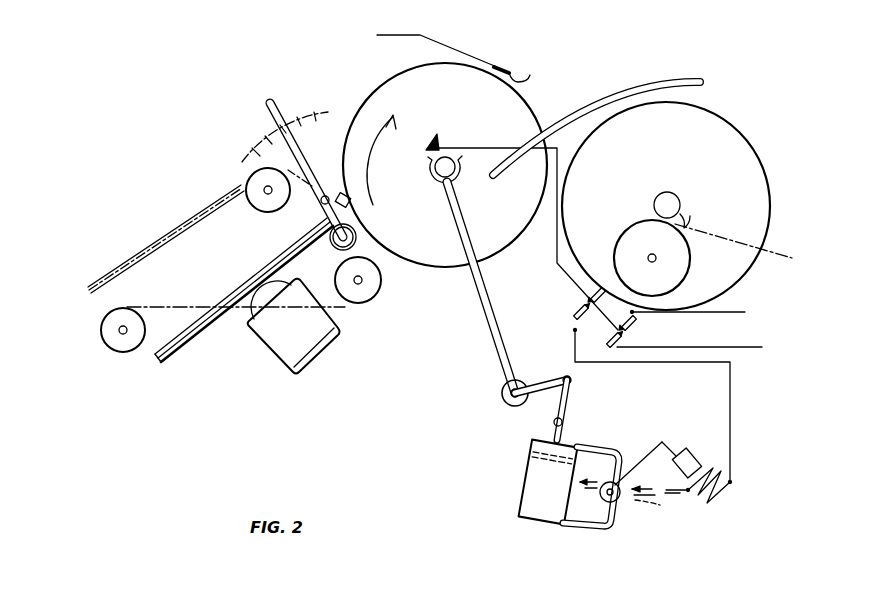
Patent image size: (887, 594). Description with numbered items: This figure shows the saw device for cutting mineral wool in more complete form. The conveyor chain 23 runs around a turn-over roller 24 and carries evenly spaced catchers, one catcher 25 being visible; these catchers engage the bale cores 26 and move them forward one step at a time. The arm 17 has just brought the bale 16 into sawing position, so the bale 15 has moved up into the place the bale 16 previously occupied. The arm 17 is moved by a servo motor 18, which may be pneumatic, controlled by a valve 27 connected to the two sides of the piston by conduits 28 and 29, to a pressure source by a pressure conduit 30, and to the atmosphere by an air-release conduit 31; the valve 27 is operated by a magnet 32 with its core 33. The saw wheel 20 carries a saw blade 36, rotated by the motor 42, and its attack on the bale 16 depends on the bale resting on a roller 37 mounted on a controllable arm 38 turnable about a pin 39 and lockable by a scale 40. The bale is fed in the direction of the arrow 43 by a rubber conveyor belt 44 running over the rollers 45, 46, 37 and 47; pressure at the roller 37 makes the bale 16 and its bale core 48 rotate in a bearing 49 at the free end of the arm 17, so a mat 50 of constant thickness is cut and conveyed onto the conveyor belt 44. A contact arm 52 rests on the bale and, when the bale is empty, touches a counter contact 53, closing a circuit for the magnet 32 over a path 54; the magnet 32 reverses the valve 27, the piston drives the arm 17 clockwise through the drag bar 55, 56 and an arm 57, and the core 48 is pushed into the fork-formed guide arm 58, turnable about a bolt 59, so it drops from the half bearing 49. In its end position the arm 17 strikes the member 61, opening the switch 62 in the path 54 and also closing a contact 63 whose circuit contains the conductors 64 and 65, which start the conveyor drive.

The bale 15 is at (688, 146).
The bale 16 is at (498, 114).
The arm 17 is at (496, 298).
The servo motor 18 is at (522, 480).
The saw wheel 20 is at (200, 350).
The conveyor chain 23 is at (728, 240).
The turn-over roller 24 is at (690, 262).
The catcher 25 is at (688, 212).
The bale core 26 is at (655, 196).
The valve 27 is at (618, 503).
The conduit 28 is at (580, 528).
The conduit 29 is at (606, 456).
The pressure conduit 30 is at (648, 500).
The air-release conduit 31 is at (594, 490).
The magnet 32 is at (695, 500).
The core 33 is at (694, 458).
The saw blade 36 is at (268, 260).
The roller 37 is at (334, 246).
The controllable arm 38 is at (331, 170).
The pin 39 is at (318, 203).
The scale 40 is at (312, 104).
The motor 42 is at (288, 356).
The arrow 43 is at (370, 168).
The conveyor belt 44 is at (180, 302).
The roller 45 is at (124, 352).
The roller 46 is at (380, 292).
The roller 47 is at (252, 207).
The bale core 48 is at (436, 163).
The bearing 49 is at (458, 174).
The mat 50 is at (193, 210).
The contact arm 52 is at (484, 62).
The counter contact 53 is at (437, 134).
The path 54 is at (553, 258).
The drag bar 55 is at (564, 430).
The drag bar 56 is at (572, 402).
The arm 57 is at (545, 384).
The fork-formed guide arm 58 is at (586, 97).
The bolt 59 is at (702, 78).
The member 61 is at (582, 300).
The switch 62 is at (575, 330).
The contact 63 is at (612, 350).
The conductor 64 is at (740, 316).
The conductor 65 is at (742, 350).